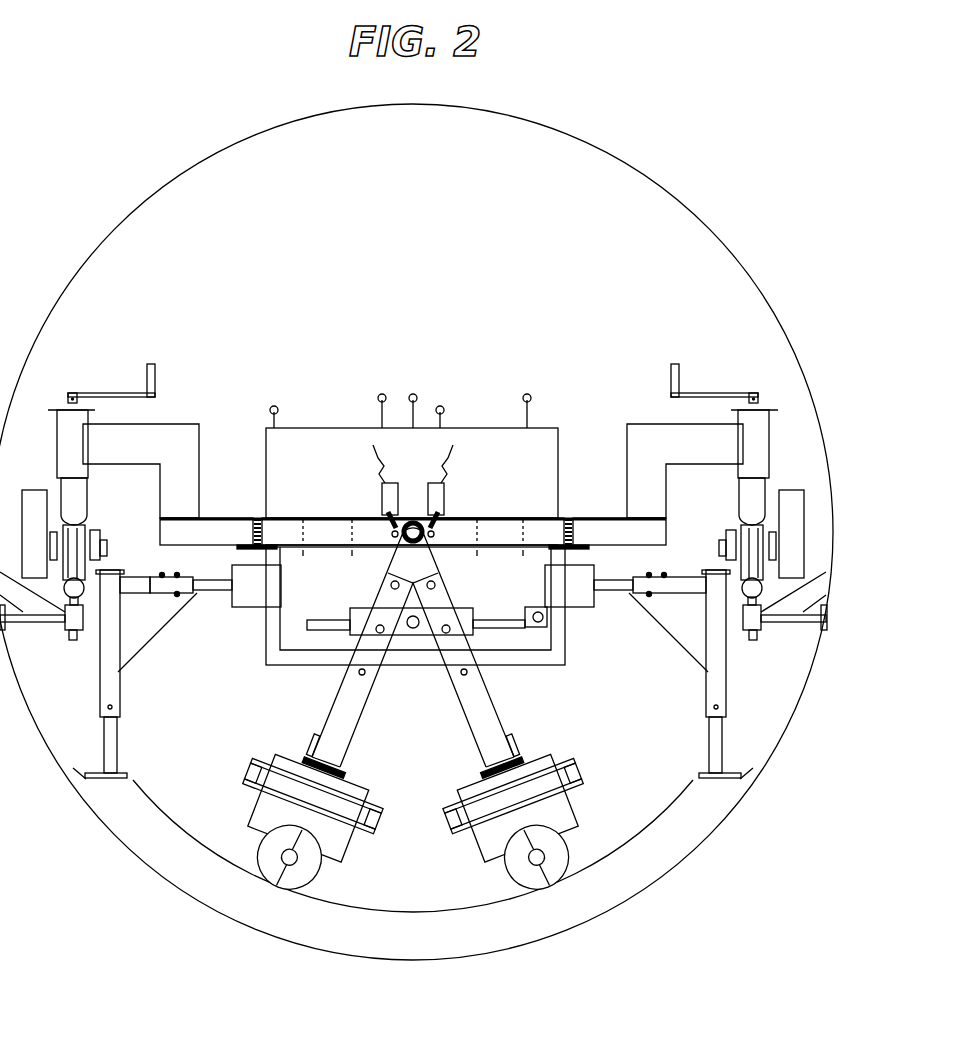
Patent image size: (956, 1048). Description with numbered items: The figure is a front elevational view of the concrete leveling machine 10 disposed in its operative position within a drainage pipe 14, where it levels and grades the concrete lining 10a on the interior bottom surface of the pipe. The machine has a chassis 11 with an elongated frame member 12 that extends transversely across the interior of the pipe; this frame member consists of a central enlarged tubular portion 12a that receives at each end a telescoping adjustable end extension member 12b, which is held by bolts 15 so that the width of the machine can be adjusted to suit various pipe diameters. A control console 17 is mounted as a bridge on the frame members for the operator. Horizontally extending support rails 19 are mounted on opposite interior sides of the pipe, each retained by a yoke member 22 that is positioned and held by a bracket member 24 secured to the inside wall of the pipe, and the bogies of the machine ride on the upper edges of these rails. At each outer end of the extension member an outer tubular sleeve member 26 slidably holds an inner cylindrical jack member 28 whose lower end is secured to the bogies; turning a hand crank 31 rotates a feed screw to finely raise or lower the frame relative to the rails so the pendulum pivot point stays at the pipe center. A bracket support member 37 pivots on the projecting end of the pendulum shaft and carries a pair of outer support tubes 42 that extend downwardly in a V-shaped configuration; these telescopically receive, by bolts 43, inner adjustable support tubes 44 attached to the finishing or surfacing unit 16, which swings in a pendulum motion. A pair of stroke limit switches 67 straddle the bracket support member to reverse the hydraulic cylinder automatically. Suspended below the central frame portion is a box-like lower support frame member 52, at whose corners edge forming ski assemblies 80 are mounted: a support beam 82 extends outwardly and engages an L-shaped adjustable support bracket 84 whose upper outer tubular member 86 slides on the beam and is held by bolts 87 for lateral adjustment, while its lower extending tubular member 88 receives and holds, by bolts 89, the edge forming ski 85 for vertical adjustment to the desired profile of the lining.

The concrete leveling machine 10 is at (250, 460).
The concrete lining 10a is at (452, 944).
The chassis 11 is at (571, 515).
The elongated frame member 12 is at (258, 512).
The central enlarged tubular portion 12a is at (538, 523).
The telescoping adjustable end extension member 12b is at (178, 532).
The drainage pipe 14 is at (650, 178).
The bolts 15 is at (250, 548).
The finishing or surfacing unit 16 is at (363, 757).
The control console 17 is at (475, 426).
The support rails 19 is at (82, 597).
The yoke member 22 is at (65, 608).
The bracket member 24 is at (67, 630).
The outer tubular sleeve member 26 is at (67, 447).
The inner cylindrical jack member 28 is at (73, 503).
The hand crank 31 is at (155, 380).
The bracket support member 37 is at (400, 569).
The outer support tubes 42 is at (363, 705).
The bolts 43 is at (362, 673).
The inner adjustable support tubes 44 is at (330, 766).
The lower support frame member 52 is at (556, 641).
The stroke limit switches 67 is at (378, 512).
The edge forming ski assembly 80 is at (155, 627).
The support beam 82 is at (604, 590).
The L-shaped adjustable support bracket 84 is at (110, 673).
The edge forming ski 85 is at (730, 774).
The upper outer tubular member 86 is at (672, 588).
The bolts 87 is at (160, 573).
The lower extending tubular member 88 is at (717, 673).
The bolts 89 is at (710, 705).